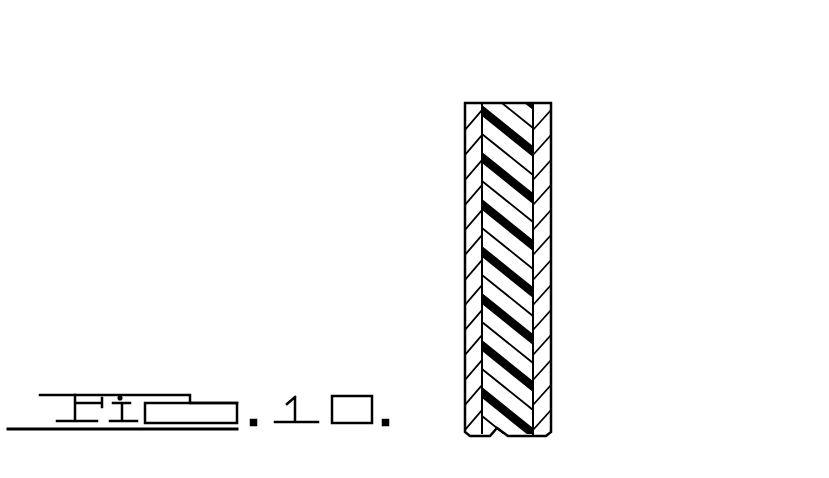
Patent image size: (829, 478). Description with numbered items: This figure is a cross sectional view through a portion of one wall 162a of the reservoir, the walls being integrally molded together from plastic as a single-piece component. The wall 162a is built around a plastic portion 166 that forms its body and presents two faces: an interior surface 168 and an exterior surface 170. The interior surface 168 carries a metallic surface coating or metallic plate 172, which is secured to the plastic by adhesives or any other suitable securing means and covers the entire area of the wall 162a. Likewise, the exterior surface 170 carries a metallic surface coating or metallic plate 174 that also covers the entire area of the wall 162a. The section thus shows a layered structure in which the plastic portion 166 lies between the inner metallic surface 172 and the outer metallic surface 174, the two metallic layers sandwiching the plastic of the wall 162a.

The wall 162a is at (514, 90).
The plastic portion 166 is at (510, 118).
The interior surface 168 is at (482, 143).
The exterior surface 170 is at (543, 135).
The metallic surface coating 172 is at (477, 207).
The metallic surface coating 174 is at (543, 198).